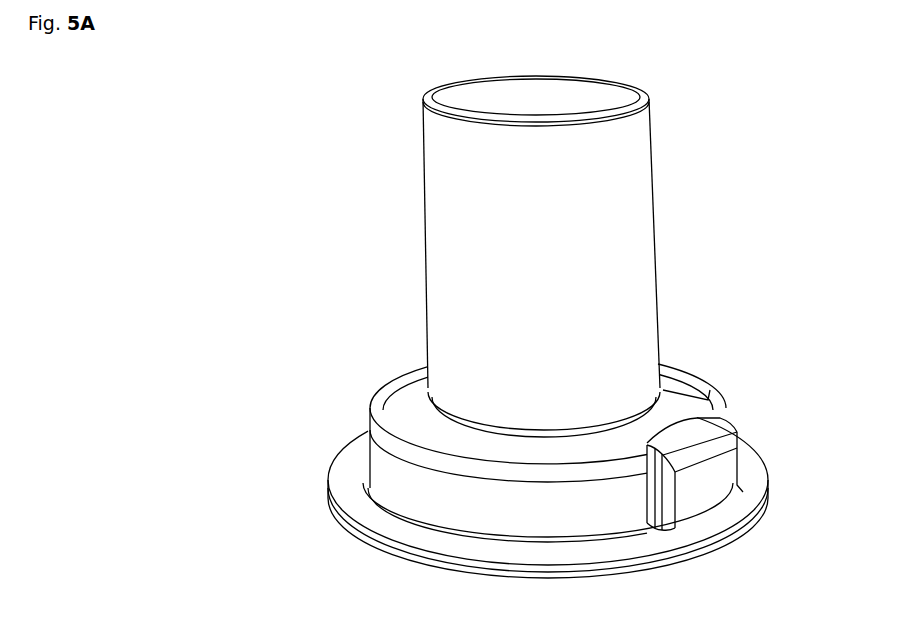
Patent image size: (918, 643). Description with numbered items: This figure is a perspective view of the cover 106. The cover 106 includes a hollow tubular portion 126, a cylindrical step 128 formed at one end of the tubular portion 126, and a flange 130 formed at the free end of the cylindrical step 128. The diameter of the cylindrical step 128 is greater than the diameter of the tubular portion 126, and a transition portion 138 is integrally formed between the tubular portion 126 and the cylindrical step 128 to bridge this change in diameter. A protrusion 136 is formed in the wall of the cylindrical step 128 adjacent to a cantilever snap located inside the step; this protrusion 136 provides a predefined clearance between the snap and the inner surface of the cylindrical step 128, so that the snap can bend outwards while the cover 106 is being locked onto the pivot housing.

The cover 106 is at (255, 169).
The hollow tubular portion 126 is at (438, 148).
The cylindrical step 128 is at (392, 464).
The flange 130 is at (420, 545).
The protrusion 136 is at (717, 472).
The transition portion 138 is at (643, 430).